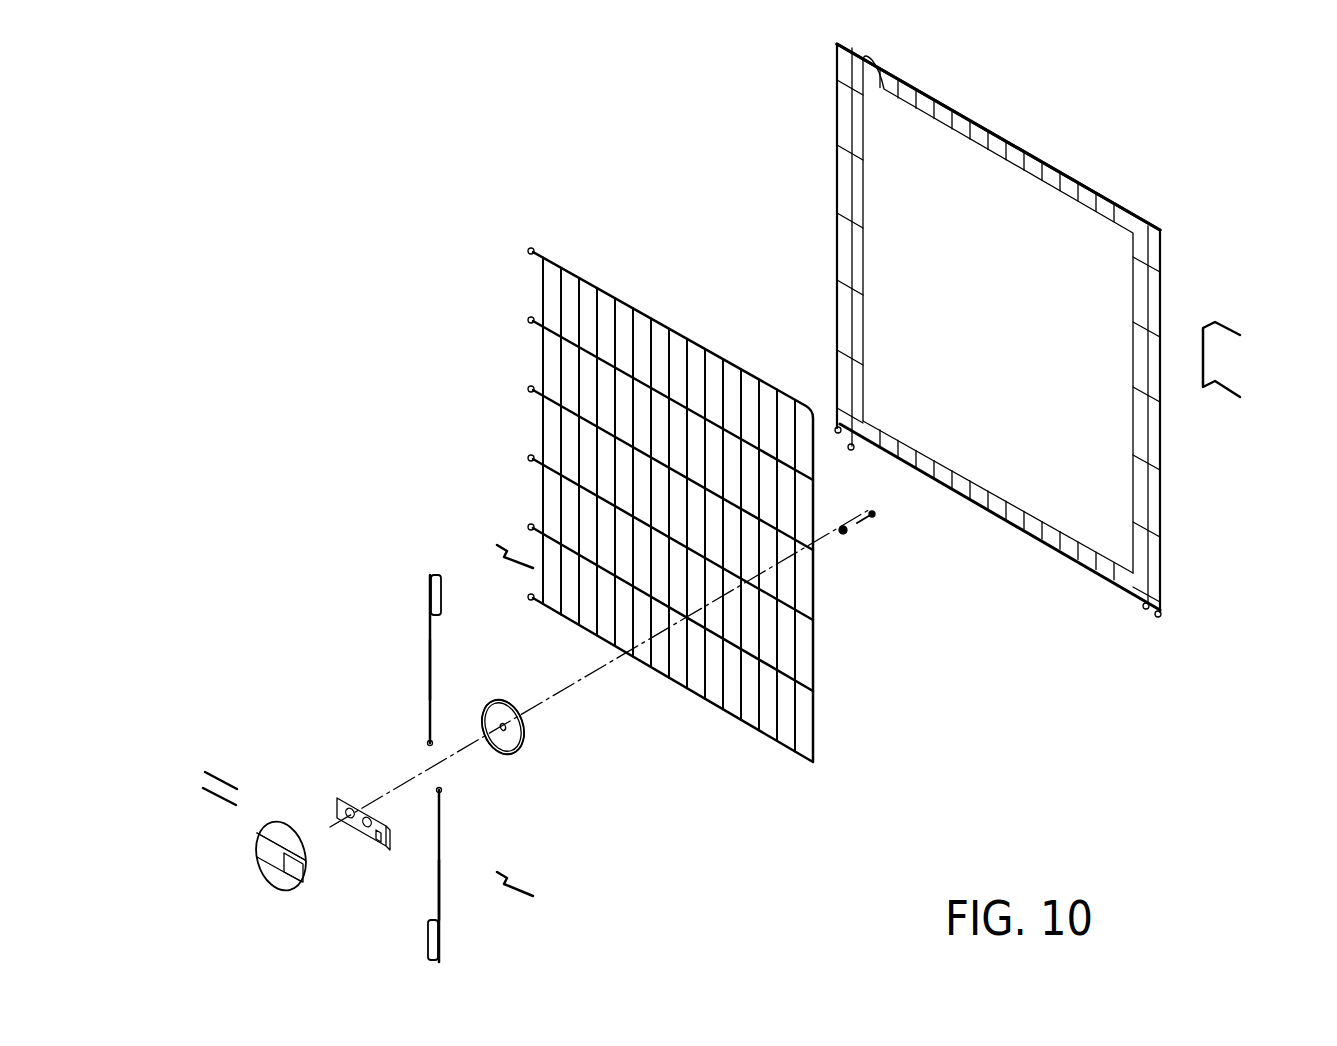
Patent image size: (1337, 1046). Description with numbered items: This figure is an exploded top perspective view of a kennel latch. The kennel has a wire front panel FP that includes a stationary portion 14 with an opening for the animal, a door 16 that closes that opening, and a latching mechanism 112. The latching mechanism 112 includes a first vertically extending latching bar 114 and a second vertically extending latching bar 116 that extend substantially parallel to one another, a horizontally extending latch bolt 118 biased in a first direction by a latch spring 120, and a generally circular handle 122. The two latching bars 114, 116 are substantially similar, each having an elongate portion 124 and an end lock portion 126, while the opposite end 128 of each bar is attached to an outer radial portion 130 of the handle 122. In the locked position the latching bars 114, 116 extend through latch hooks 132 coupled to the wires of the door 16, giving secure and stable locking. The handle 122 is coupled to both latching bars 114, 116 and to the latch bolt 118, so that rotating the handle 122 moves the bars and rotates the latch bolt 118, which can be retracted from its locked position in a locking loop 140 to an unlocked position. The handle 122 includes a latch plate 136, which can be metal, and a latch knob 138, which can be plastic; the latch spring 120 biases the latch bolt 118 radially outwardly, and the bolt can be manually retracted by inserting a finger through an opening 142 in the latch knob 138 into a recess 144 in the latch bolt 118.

The front panel FP is at (922, 96).
The stationary portion 14 is at (1165, 230).
The door 16 is at (658, 318).
The locking loop 140 is at (1230, 330).
The latching mechanism 112 is at (262, 618).
The first vertically extending latching bar 114 is at (428, 650).
The second vertically extending latching bar 116 is at (440, 856).
The latch bolt 118 is at (342, 796).
The latch spring 120 is at (220, 773).
The handle 122 is at (275, 882).
The elongate portion 124 is at (432, 686).
The end lock portion 126 is at (437, 577).
The end 128 is at (428, 745).
The outer radial portion 130 is at (527, 727).
The latch hook 132 is at (504, 547).
The latch plate 136 is at (525, 758).
The latch knob 138 is at (258, 860).
The opening 142 is at (302, 877).
The recess 144 is at (370, 832).